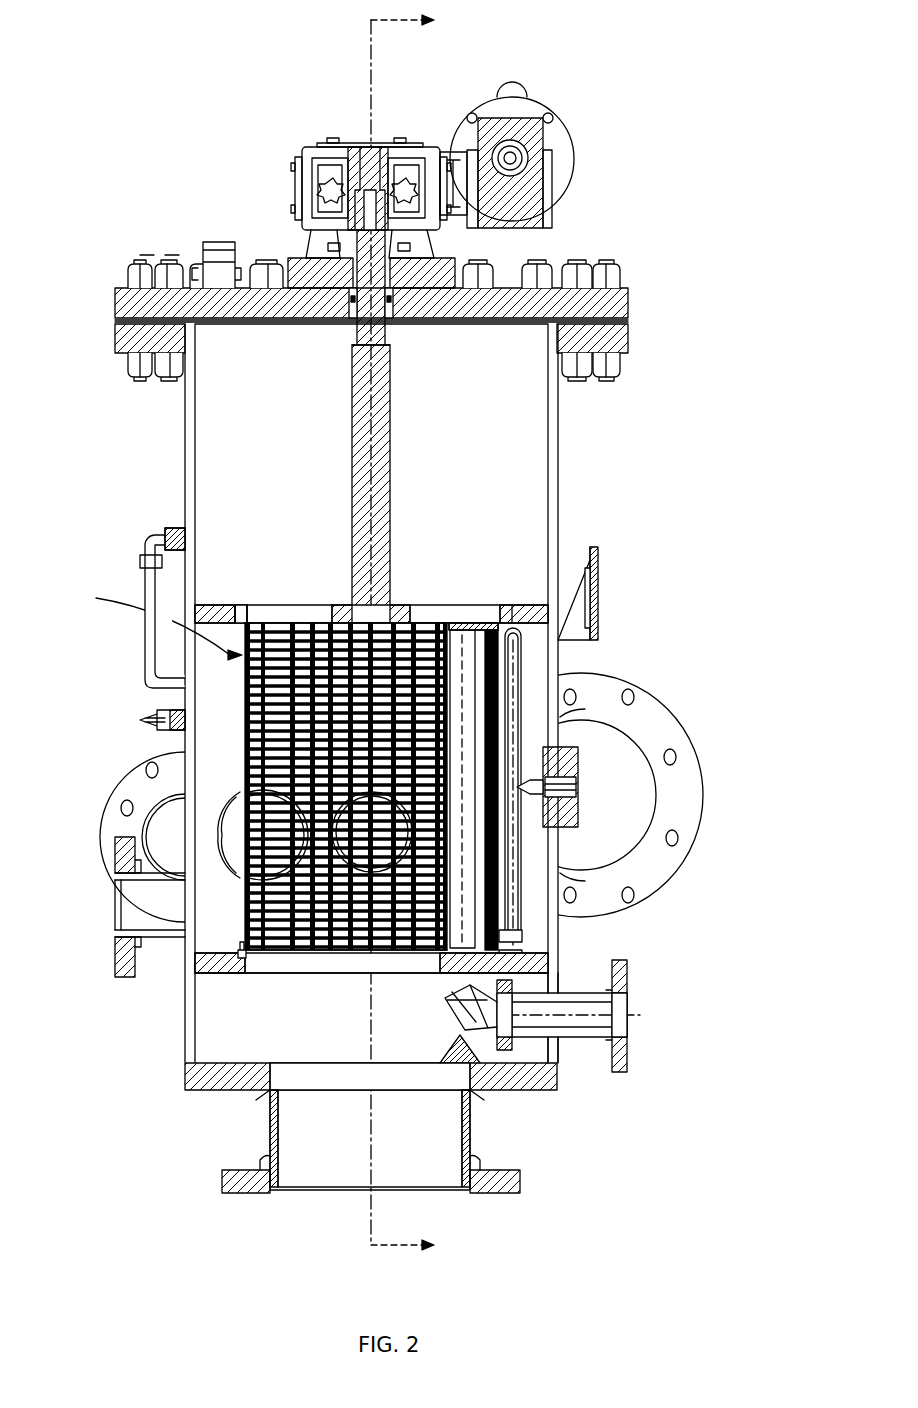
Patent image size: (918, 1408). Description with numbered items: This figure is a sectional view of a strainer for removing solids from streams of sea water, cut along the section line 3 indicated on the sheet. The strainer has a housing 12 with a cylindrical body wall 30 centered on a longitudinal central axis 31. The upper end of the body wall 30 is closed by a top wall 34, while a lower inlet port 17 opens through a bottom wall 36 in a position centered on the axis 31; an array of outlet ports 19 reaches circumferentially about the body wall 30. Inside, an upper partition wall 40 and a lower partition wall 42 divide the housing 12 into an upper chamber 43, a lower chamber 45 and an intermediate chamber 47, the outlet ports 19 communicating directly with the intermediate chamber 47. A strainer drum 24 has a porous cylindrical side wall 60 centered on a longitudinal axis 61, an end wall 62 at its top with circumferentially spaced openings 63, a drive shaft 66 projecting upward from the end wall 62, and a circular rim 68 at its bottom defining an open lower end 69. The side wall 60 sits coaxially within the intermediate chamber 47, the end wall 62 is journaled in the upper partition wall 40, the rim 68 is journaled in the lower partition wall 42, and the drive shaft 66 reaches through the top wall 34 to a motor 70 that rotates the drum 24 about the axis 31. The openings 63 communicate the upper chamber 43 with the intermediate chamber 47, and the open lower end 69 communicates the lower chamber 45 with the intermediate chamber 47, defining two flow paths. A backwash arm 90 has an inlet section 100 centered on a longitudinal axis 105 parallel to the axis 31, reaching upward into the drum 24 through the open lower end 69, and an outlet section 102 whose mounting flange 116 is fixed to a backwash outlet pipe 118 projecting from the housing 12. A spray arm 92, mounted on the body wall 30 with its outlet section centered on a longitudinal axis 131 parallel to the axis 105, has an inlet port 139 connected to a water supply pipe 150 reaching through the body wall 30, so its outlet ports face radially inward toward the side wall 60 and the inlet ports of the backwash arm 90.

The section line 3- 3 is at (412, 633).
The housing 12 is at (178, 410).
The lower inlet port 17 is at (328, 1168).
The outlet ports 19 is at (112, 895).
The strainer drum 24 is at (154, 622).
The body wall 30 is at (185, 445).
The central axis 31 is at (365, 78).
The top wall 34 is at (118, 300).
The bottom wall 36 is at (230, 1182).
The upper partition wall 40 is at (208, 605).
The lower partition wall 42 is at (225, 965).
The upper chamber 43 is at (298, 454).
The lower chamber 45 is at (262, 1024).
The intermediate chamber 47 is at (236, 734).
The side wall 60 is at (245, 693).
The longitudinal axis 61 is at (392, 404).
The end wall 62 is at (492, 640).
The openings 63 is at (305, 605).
The drive shaft 66 is at (358, 388).
The circular rim 68 is at (283, 963).
The open lower end 69 is at (353, 973).
The motor 70 is at (538, 105).
The backwash arm 90 is at (462, 640).
The spray arm 92 is at (520, 850).
The inlet section 100 is at (563, 625).
The outlet section 102 is at (455, 1040).
The longitudinal axis 105 is at (520, 660).
The mounting flange 116 is at (503, 1035).
The backwash outlet pipe 118 is at (603, 990).
The longitudinal axis 131 is at (467, 692).
The inlet port 139 is at (545, 797).
The water supply pipe 150 is at (580, 770).